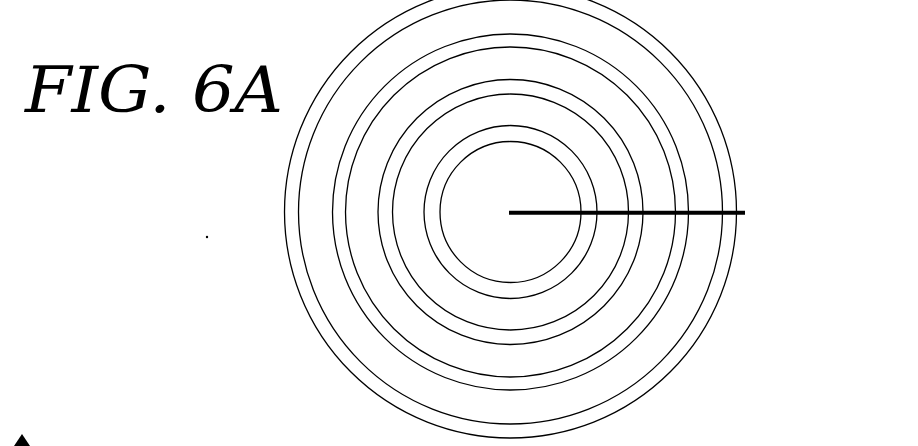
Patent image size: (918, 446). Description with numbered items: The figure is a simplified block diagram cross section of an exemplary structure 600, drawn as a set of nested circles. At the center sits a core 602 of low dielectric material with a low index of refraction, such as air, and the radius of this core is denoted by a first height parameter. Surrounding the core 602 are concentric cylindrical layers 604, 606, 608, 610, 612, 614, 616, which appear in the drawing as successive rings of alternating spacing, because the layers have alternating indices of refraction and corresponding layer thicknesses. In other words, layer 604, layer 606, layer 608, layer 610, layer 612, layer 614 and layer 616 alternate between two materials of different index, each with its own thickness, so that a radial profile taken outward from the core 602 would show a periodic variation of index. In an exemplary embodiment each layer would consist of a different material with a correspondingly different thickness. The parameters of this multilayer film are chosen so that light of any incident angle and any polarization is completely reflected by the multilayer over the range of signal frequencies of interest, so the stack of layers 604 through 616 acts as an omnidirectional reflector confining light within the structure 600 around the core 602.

The structure 600 is at (537, 219).
The core 602 is at (518, 175).
The concentric cylindrical layer 604 is at (565, 155).
The concentric cylindrical layer 606 is at (597, 155).
The concentric cylindrical layer 608 is at (628, 158).
The concentric cylindrical layer 610 is at (655, 167).
The concentric cylindrical layer 612 is at (672, 272).
The concentric cylindrical layer 614 is at (682, 302).
The concentric cylindrical layer 616 is at (690, 337).